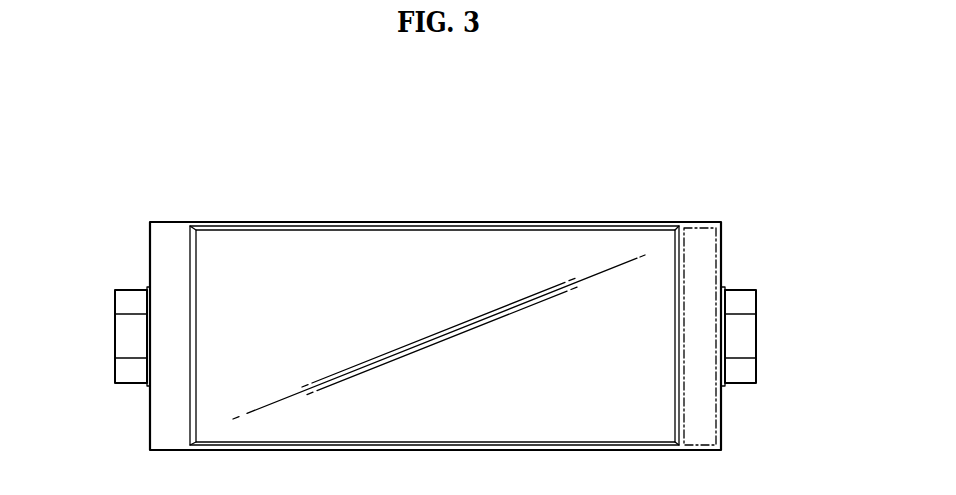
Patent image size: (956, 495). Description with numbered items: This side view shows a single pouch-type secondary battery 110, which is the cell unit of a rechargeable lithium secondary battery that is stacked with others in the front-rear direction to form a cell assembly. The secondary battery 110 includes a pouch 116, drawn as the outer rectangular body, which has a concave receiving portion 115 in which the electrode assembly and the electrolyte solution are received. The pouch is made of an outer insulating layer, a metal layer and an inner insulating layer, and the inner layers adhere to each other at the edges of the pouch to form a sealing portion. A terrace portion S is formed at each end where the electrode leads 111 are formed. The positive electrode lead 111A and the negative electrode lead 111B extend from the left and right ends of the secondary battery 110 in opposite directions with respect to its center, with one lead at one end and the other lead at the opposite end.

The secondary battery 110 is at (224, 157).
The electrode leads 111 is at (612, 92).
The positive electrode lead 111A is at (122, 339).
The negative electrode lead 111B is at (752, 337).
The receiving portion 115 is at (279, 263).
The pouch 116 is at (172, 222).
The terrace portion S is at (700, 228).